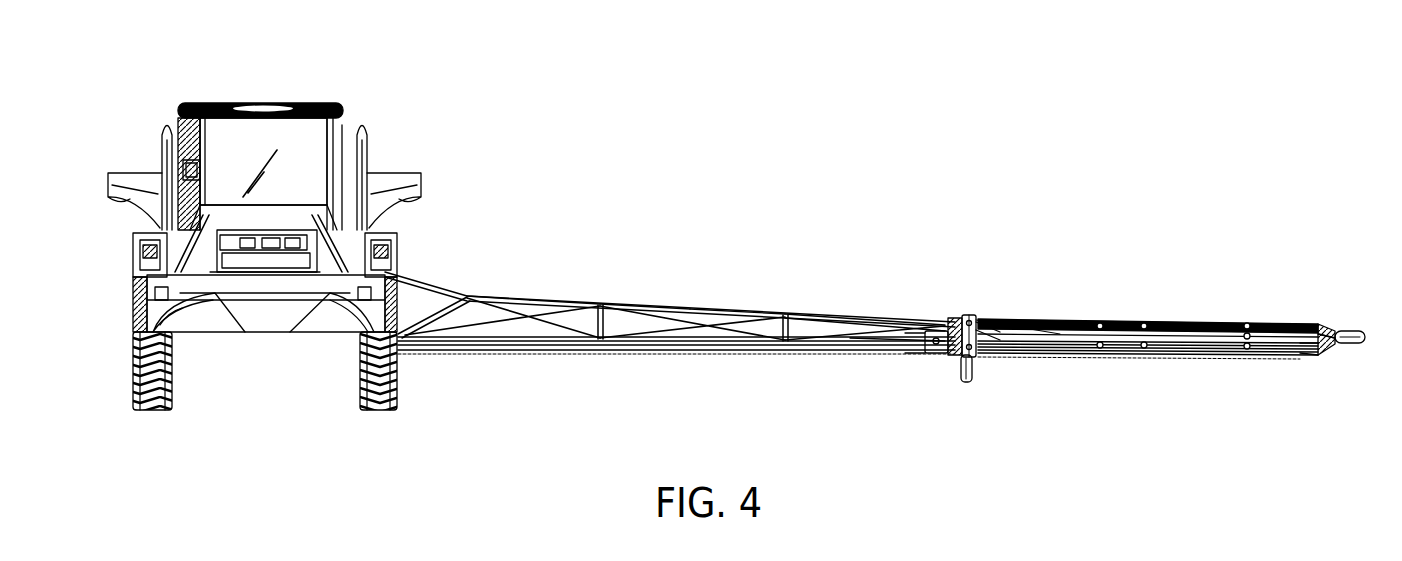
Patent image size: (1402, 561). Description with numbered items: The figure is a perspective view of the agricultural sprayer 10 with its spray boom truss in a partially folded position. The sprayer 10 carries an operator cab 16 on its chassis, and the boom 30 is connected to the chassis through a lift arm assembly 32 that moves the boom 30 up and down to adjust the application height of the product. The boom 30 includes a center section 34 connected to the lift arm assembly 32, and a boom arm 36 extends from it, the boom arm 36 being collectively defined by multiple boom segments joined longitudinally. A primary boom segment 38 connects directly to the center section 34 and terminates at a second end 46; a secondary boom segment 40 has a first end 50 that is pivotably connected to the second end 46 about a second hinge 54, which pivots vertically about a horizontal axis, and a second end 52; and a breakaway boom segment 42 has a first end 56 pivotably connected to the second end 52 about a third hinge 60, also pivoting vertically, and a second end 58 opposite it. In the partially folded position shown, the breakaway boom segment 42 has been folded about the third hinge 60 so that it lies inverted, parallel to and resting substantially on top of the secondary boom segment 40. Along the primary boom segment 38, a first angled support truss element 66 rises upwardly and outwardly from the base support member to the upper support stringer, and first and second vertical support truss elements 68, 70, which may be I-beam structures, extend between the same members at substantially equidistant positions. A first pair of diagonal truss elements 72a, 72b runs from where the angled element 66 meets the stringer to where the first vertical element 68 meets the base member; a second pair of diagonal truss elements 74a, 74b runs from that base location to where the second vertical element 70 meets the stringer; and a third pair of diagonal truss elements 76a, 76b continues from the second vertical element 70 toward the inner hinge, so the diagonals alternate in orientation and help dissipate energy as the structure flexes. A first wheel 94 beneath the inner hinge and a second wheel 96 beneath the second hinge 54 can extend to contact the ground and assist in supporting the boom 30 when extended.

The sprayer 10 is at (239, 81).
The operator cab 16 is at (212, 157).
The boom 30 is at (269, 320).
The lift arm assembly 32 is at (334, 284).
The center section 34 is at (219, 313).
The boom arm 36 is at (667, 389).
The primary boom segment 38 is at (735, 349).
The secondary boom segment 40 is at (1197, 356).
The breakaway boom segment 42 is at (1196, 322).
The second end of primary boom segment 46 is at (928, 359).
The first end of secondary boom segment 50 is at (966, 332).
The second end of secondary boom segment 52 is at (1295, 353).
The second hinge 54 is at (953, 327).
The first end of breakaway boom segment 56 is at (1300, 322).
The second end of breakaway boom segment 58 is at (982, 327).
The third hinge 60 is at (1333, 351).
The first angled support truss element 66 is at (438, 322).
The first vertical support truss element 68 is at (610, 308).
The second vertical support truss element 70 is at (790, 320).
The first diagonal truss element 72a is at (491, 303).
The first diagonal truss element 72b is at (552, 303).
The second diagonal truss element 74a is at (662, 309).
The second diagonal truss element 74b is at (748, 318).
The third diagonal truss element 76a is at (845, 322).
The third diagonal truss element 76b is at (922, 353).
The first wheel 94 is at (969, 366).
The second wheel 96 is at (1355, 331).